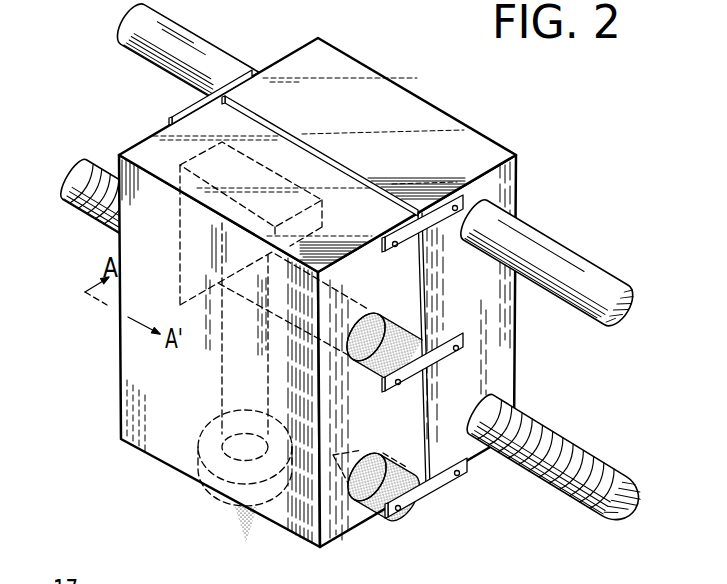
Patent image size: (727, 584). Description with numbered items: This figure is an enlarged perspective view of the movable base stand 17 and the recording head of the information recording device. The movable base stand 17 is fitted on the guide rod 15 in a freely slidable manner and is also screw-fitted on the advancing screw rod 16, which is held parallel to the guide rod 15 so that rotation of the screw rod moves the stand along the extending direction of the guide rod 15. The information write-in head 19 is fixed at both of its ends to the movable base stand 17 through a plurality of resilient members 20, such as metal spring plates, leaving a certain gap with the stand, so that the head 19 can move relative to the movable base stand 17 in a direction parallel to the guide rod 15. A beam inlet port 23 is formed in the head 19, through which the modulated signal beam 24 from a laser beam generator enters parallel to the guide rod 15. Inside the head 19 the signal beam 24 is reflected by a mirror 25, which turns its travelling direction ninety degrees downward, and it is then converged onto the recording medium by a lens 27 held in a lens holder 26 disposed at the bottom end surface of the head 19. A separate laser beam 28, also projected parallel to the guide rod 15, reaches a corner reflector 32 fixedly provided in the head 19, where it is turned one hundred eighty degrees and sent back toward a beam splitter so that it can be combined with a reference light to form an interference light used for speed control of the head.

The guide rod 15 is at (556, 263).
The advancing screw rod 16 is at (544, 419).
The movable base stand 17 is at (394, 93).
The information write-in head 19 is at (134, 372).
The resilient members 20 is at (186, 102).
The beam inlet port 23 is at (360, 358).
The signal beam 24 is at (391, 330).
The mirror 25 is at (323, 152).
The lens holder 26 is at (200, 492).
The lens 27 is at (220, 439).
The laser beam 28 is at (392, 474).
The corner reflector 32 is at (357, 519).